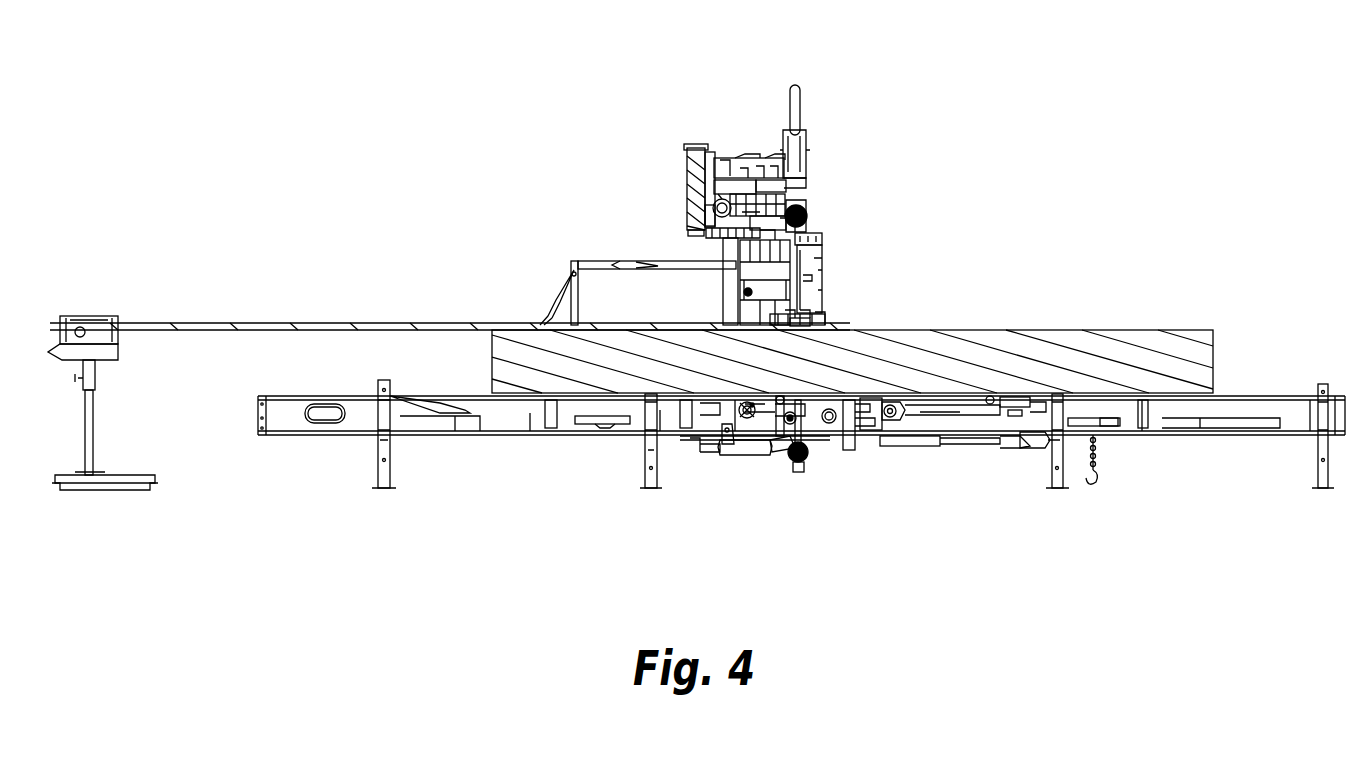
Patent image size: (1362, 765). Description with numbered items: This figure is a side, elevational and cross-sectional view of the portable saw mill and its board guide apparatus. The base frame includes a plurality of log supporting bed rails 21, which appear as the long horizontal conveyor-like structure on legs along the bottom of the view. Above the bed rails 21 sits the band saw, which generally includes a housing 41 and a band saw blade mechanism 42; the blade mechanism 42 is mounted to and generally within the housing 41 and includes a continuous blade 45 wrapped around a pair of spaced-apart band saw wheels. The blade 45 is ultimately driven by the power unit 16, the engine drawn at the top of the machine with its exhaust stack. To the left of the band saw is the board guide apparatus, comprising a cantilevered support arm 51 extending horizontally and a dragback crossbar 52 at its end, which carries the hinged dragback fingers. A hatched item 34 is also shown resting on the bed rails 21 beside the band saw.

The power unit 16 is at (740, 115).
The log supporting bed rails 21 is at (537, 403).
The bale / compressed material 34 is at (1090, 330).
The housing 41 is at (820, 238).
The band saw blade mechanism 42 is at (815, 272).
The continuous blade 45 is at (830, 340).
The cantilevered support arm 51 is at (655, 252).
The dragback crossbar 52 is at (572, 252).